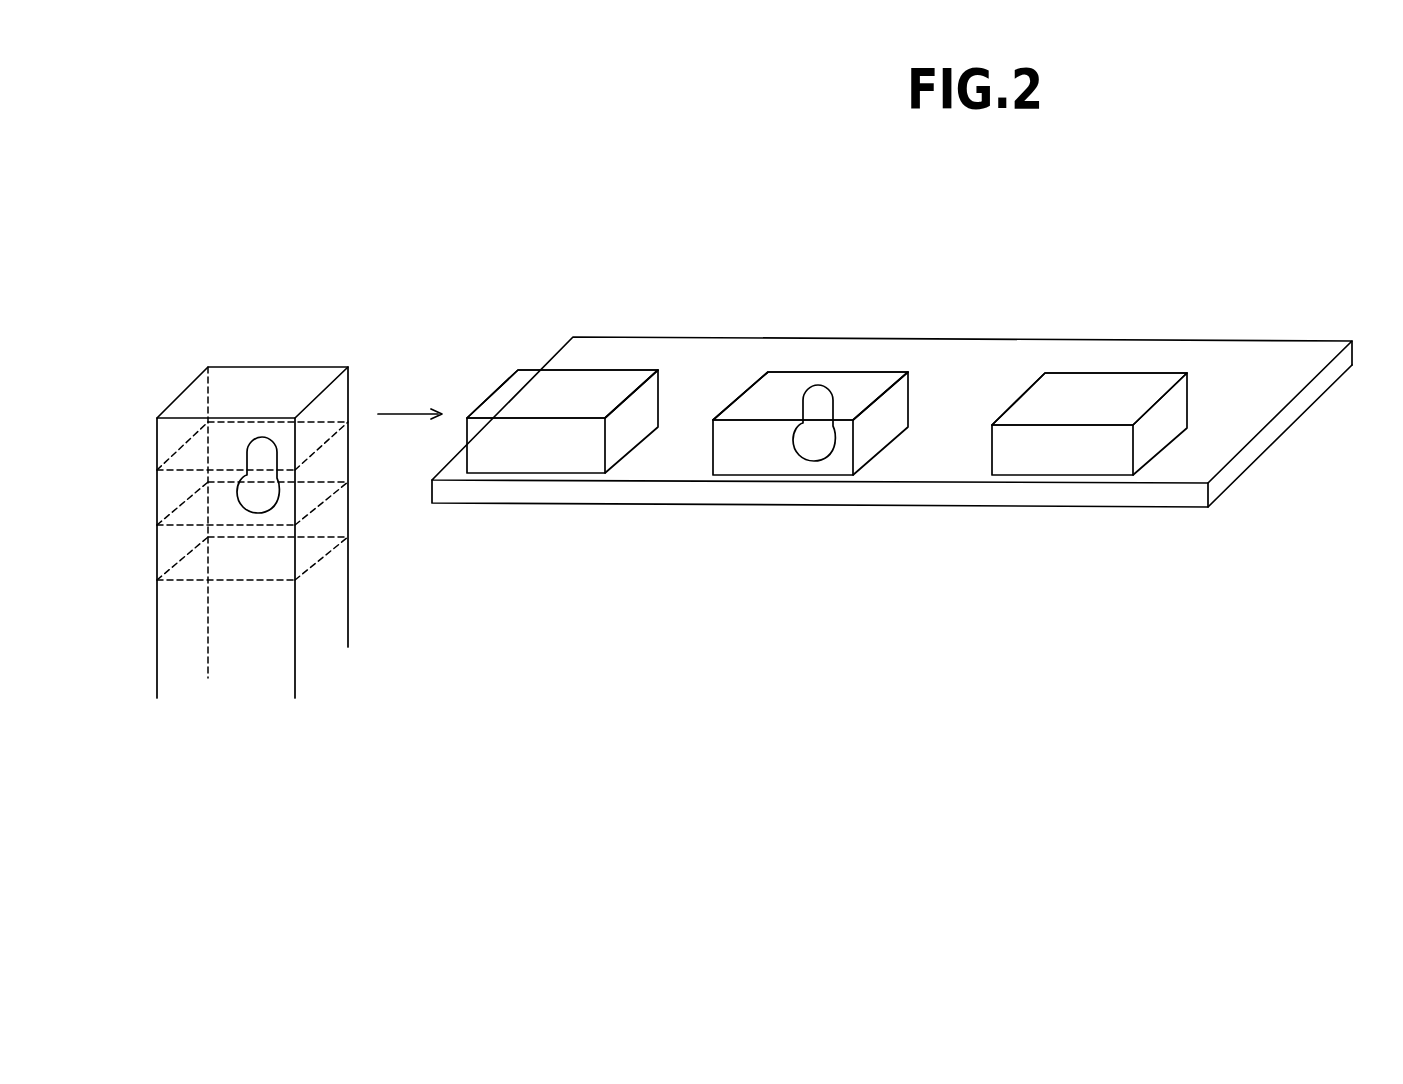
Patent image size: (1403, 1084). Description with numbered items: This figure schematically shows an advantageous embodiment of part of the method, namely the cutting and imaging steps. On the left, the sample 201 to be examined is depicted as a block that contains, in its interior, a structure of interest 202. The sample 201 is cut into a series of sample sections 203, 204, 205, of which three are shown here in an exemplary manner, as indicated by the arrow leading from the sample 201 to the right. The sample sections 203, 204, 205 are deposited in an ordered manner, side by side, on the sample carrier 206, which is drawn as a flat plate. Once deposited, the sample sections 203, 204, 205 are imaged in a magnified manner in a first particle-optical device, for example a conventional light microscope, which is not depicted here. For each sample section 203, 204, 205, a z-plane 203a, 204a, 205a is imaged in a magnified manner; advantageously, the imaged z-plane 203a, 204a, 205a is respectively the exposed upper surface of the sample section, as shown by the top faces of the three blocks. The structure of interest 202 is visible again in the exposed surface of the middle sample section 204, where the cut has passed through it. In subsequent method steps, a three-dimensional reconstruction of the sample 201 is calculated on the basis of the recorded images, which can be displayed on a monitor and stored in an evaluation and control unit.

The sample 201 is at (229, 382).
The structure of interest 202 is at (257, 437).
The sample section 203 is at (505, 462).
The z-plane 203a is at (598, 385).
The sample section 204 is at (738, 462).
The z-plane 204a is at (783, 385).
The sample section 205 is at (1052, 463).
The z-plane 205a is at (1097, 390).
The sample carrier 206 is at (1252, 388).